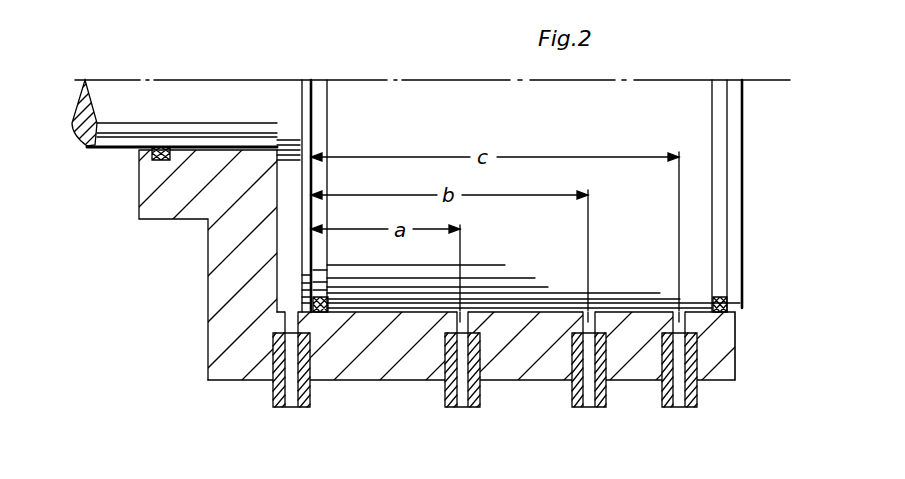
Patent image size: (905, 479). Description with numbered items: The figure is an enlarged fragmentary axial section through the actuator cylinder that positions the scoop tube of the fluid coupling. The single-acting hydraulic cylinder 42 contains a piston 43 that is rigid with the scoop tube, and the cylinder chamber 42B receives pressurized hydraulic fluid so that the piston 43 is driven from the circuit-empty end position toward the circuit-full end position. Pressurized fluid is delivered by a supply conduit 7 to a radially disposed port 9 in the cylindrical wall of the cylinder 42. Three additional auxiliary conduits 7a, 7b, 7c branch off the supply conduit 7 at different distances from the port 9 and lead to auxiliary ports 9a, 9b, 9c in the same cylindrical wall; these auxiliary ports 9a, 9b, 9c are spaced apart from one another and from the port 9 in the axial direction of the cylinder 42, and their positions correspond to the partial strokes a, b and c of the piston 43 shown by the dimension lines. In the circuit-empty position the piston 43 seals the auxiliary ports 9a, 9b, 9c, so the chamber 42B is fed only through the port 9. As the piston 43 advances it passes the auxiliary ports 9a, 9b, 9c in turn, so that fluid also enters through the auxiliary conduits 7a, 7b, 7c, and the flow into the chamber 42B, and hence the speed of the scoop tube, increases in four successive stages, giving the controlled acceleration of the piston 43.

The supply conduit 7 is at (280, 392).
The auxiliary conduit 7a is at (450, 392).
The auxiliary conduit 7b is at (578, 390).
The auxiliary conduit 7c is at (670, 388).
The port 9 is at (292, 325).
The auxiliary port 9a is at (478, 318).
The auxiliary port 9b is at (602, 318).
The auxiliary port 9c is at (687, 320).
The hydraulic cylinder 42 is at (720, 335).
The cylinder chamber 42B is at (282, 226).
The piston 43 is at (483, 103).